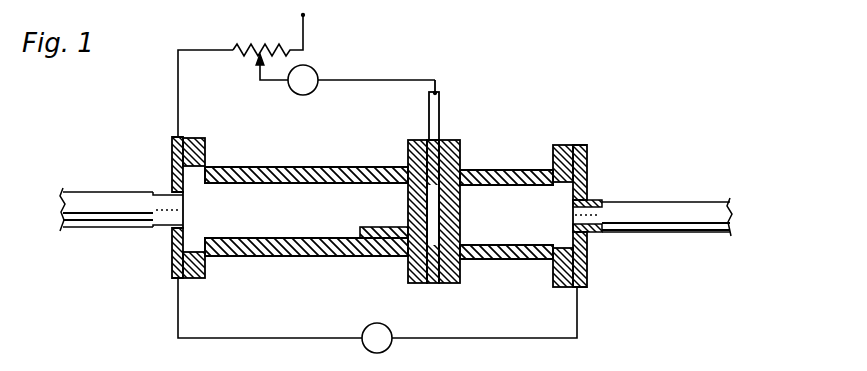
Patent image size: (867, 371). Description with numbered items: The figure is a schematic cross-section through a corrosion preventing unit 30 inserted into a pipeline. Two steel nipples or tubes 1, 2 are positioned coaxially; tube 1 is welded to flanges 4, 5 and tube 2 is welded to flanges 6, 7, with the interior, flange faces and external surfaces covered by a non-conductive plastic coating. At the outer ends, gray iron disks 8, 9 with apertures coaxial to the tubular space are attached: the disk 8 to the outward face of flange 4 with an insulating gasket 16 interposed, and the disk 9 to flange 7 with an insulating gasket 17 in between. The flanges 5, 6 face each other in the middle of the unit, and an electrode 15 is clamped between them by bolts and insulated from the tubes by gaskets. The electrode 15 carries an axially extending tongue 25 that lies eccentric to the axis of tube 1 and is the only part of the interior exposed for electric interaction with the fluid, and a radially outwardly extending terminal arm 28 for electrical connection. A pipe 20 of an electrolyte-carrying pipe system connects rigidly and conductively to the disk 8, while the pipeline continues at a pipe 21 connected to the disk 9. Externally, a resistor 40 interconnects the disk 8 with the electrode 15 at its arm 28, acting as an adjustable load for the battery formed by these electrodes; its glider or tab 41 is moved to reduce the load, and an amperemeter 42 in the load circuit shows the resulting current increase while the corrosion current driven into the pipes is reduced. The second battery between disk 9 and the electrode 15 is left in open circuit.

The steel nipple or tube 1 is at (306, 167).
The steel nipple or tube 2 is at (519, 185).
The flange 4 is at (206, 146).
The flange 5 is at (408, 158).
The flange 6 is at (462, 157).
The flange 7 is at (552, 147).
The disk 8 is at (173, 160).
The disk 9 is at (588, 158).
The electrode 15 is at (440, 216).
The insulating gasket 16 is at (176, 262).
The insulating gasket 17 is at (588, 266).
The pipe 20 is at (108, 184).
The pipe 21 is at (640, 204).
The tongue 25 is at (396, 256).
The terminal arm 28 is at (440, 100).
The unit 30 is at (377, 315).
The resistor 40 is at (242, 55).
The glider or tab 41 is at (258, 64).
The amperemeter 42 is at (318, 71).